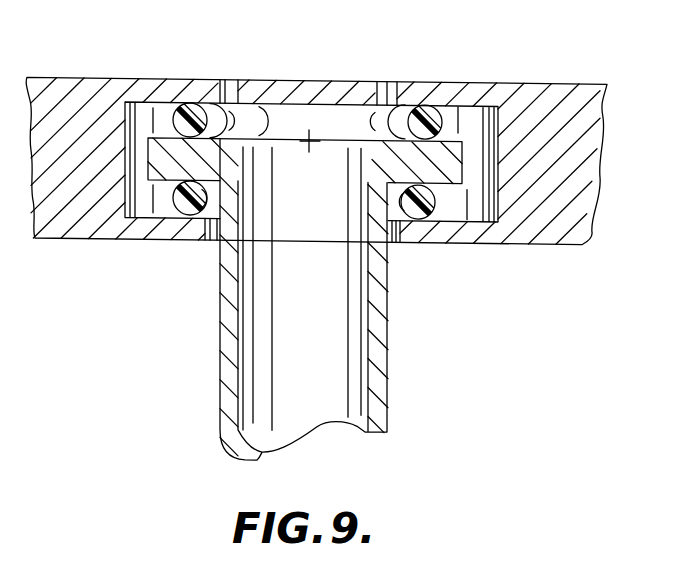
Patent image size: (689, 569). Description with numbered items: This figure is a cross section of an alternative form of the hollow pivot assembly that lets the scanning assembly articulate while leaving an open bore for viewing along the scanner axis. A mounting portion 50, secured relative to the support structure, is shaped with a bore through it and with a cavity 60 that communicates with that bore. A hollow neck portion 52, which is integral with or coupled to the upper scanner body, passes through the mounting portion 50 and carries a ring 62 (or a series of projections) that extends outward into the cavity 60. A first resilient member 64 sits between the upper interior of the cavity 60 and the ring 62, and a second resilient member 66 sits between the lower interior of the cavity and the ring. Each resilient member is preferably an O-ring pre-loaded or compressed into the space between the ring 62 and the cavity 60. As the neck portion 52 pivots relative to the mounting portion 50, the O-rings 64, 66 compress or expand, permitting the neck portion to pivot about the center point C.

The mounting portion 50 is at (573, 83).
The neck portion 52 is at (390, 373).
The cavity 60 is at (147, 203).
The ring 62 is at (476, 152).
The first resilient member 64 is at (213, 118).
The second resilient member 66 is at (433, 205).
The center point C is at (312, 137).